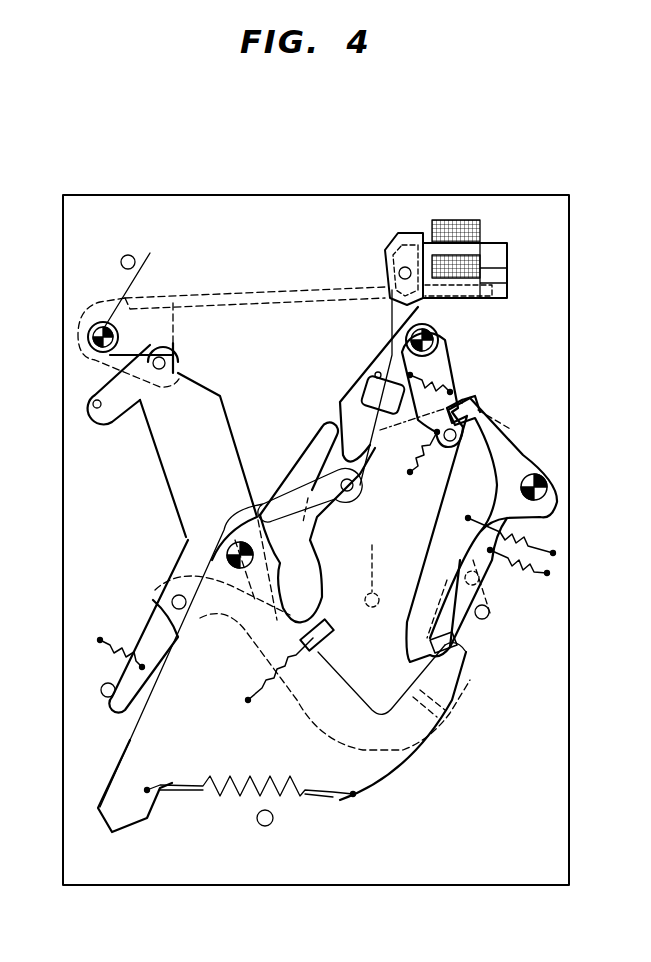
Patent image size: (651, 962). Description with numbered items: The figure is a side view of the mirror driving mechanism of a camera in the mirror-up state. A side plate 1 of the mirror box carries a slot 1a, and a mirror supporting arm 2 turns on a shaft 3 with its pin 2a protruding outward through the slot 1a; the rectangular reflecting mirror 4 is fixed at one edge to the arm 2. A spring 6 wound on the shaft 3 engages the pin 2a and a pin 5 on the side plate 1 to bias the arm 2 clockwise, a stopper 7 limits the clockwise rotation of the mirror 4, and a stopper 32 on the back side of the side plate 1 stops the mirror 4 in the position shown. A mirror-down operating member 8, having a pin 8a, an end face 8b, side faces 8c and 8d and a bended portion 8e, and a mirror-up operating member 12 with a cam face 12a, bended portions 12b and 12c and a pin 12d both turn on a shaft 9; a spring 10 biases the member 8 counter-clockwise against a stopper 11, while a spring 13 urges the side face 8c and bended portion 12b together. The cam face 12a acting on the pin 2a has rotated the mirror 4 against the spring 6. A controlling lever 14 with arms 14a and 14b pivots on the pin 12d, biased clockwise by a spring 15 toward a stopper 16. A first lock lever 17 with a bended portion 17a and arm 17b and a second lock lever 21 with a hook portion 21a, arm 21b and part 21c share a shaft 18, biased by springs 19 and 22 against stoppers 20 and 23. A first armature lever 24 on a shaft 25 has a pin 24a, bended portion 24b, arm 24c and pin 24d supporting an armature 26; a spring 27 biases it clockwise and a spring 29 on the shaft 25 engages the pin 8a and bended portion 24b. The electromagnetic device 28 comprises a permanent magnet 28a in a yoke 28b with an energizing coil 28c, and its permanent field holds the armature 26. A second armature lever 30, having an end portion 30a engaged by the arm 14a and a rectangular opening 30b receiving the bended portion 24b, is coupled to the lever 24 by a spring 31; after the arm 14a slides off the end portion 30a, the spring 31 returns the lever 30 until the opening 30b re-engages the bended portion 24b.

The side plate 1 is at (228, 190).
The slot 1a is at (93, 406).
The mirror supporting arm 2 is at (82, 311).
The pin 2a is at (176, 366).
The shaft 3 is at (115, 333).
The rectangular reflecting mirror 4 is at (270, 293).
The pin 5 is at (132, 256).
The spring 6 is at (120, 290).
The stopper 7 is at (371, 563).
The mirror-down operating member 8 is at (282, 650).
The pin 8a is at (340, 487).
The end face 8b is at (468, 664).
The side face 8c is at (355, 685).
The side face 8d is at (403, 693).
The bended portion 8e is at (125, 825).
The shaft 9 is at (232, 560).
The spring 10 is at (290, 800).
The stopper 11 is at (266, 828).
The mirror-up operating member 12 is at (175, 468).
The cam face 12a is at (205, 380).
The bended portion 12b is at (318, 636).
The bended portion 12c is at (450, 709).
The pin 12d is at (174, 602).
The spring 13 is at (323, 700).
The controlling lever 14 is at (313, 570).
The arm 14a is at (327, 430).
The arm 14b is at (120, 705).
The spring 15 is at (112, 650).
The stopper 16 is at (101, 691).
The first lock lever 17 is at (530, 458).
The bended portion 17a is at (462, 640).
The arm 17b is at (480, 403).
The shaft 18 is at (548, 488).
The spring 19 is at (540, 565).
The stopper 20 is at (486, 619).
The second lock lever 21 is at (482, 488).
The hook portion 21a is at (420, 640).
The arm 21b is at (470, 400).
The stop lever pin 21c is at (482, 582).
The spring 22 is at (530, 532).
The stopper 23 is at (492, 602).
The first armature lever 24 is at (447, 363).
The pin 24a is at (451, 442).
The bended portion 24b is at (363, 380).
The arm 24c is at (388, 255).
The pin 24d is at (404, 266).
The shaft 25 is at (441, 332).
The armature 26 is at (415, 235).
The spring 27 is at (416, 475).
The electromagnetic device 28 is at (490, 236).
The permanent magnet 28a is at (502, 270).
The yoke 28b is at (503, 290).
The energizing coil 28c is at (456, 220).
The spring 29 is at (328, 440).
The second armature lever 30 is at (382, 356).
The end portion 30a is at (362, 447).
The rectangular opening 30b is at (380, 355).
The spring 31 is at (455, 385).
The stopper 32 is at (375, 276).